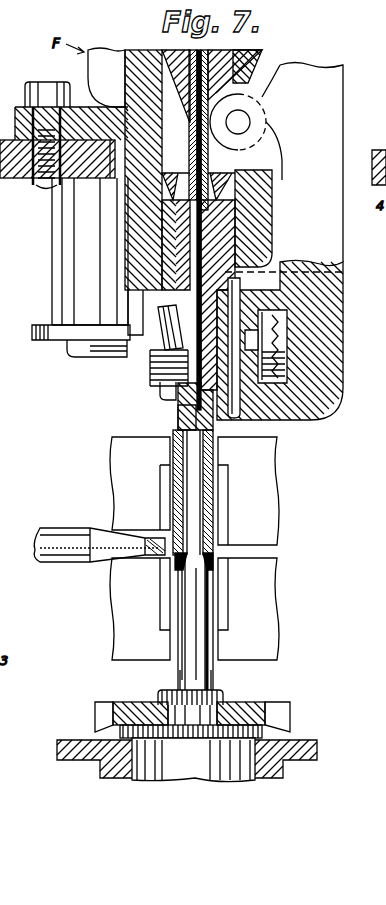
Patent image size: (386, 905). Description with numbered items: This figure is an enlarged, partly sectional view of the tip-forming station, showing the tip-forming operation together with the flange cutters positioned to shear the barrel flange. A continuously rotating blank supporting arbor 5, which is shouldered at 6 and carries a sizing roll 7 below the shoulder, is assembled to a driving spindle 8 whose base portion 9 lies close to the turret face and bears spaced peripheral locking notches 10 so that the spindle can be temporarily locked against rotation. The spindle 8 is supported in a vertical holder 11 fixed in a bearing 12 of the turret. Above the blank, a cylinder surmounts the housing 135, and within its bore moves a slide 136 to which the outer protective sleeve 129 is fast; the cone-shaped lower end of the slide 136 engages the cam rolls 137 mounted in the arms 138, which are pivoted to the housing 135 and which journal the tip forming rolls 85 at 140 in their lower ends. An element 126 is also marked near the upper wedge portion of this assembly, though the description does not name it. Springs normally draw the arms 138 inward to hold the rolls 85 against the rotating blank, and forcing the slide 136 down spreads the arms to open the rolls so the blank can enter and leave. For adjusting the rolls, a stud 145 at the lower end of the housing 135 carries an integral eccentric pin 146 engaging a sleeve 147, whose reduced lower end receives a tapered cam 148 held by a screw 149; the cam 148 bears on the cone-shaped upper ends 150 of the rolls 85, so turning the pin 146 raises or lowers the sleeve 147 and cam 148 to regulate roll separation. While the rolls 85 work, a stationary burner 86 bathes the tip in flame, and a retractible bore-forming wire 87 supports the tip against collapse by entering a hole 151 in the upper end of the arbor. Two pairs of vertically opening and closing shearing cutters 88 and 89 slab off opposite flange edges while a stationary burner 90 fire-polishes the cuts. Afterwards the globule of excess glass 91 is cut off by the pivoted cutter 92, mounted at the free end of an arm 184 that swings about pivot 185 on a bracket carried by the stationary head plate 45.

The blank supporting arbor 5 is at (205, 490).
The shoulder 6 is at (212, 568).
The sizing roll 7 is at (205, 603).
The driving spindle 8 is at (213, 677).
The base portion 9 is at (250, 703).
The locking notch 10 is at (100, 708).
The vertical holder 11 is at (175, 762).
The bearing 12 is at (100, 776).
The head plate 45 is at (10, 165).
The tip forming roll 85 is at (290, 375).
The stationary burner 86 is at (178, 397).
The bore-forming wire 87 is at (205, 210).
The shearing cutter 88 is at (163, 596).
The shearing cutter 89 is at (163, 503).
The stationary burner 90 is at (72, 566).
The globule of excess glass 91 is at (268, 330).
The pivoted cutter 92 is at (95, 355).
The wedge 126 is at (228, 64).
The outer protective sleeve 129 is at (168, 48).
The housing 135 is at (125, 50).
The slide 136 is at (252, 62).
The cam roll 137 is at (252, 100).
The arm 138 is at (332, 112).
The journal 140 is at (318, 416).
The stud 145 is at (250, 252).
The eccentric pin 146 is at (340, 272).
The sleeve 147 is at (228, 232).
The tapered cam 148 is at (242, 300).
The screw 149 is at (165, 340).
The cone-shaped upper end 150 is at (260, 340).
The hole 151 is at (178, 418).
The arm 184 is at (70, 333).
The pivot 185 is at (66, 260).